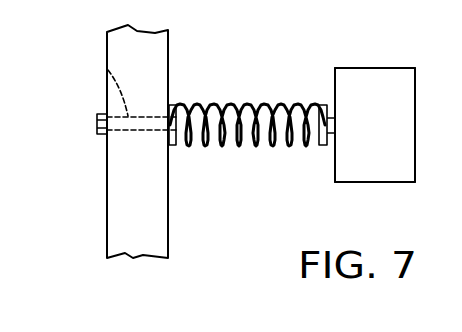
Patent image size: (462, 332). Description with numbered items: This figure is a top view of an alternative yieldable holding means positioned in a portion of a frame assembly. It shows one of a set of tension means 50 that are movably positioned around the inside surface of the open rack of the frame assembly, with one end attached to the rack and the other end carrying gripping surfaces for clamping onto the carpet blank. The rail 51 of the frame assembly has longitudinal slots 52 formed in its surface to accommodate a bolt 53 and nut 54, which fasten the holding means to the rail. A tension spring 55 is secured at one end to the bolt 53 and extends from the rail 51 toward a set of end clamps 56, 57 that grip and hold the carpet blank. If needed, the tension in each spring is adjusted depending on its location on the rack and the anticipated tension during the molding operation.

The tension means 50 is at (270, 150).
The rail 51 is at (107, 199).
The longitudinal slot 52 is at (169, 98).
The bolt 53 is at (100, 70).
The nut 54 is at (102, 113).
The tension spring 55 is at (293, 100).
The end clamp 56 is at (350, 72).
The end clamp 57 is at (375, 125).